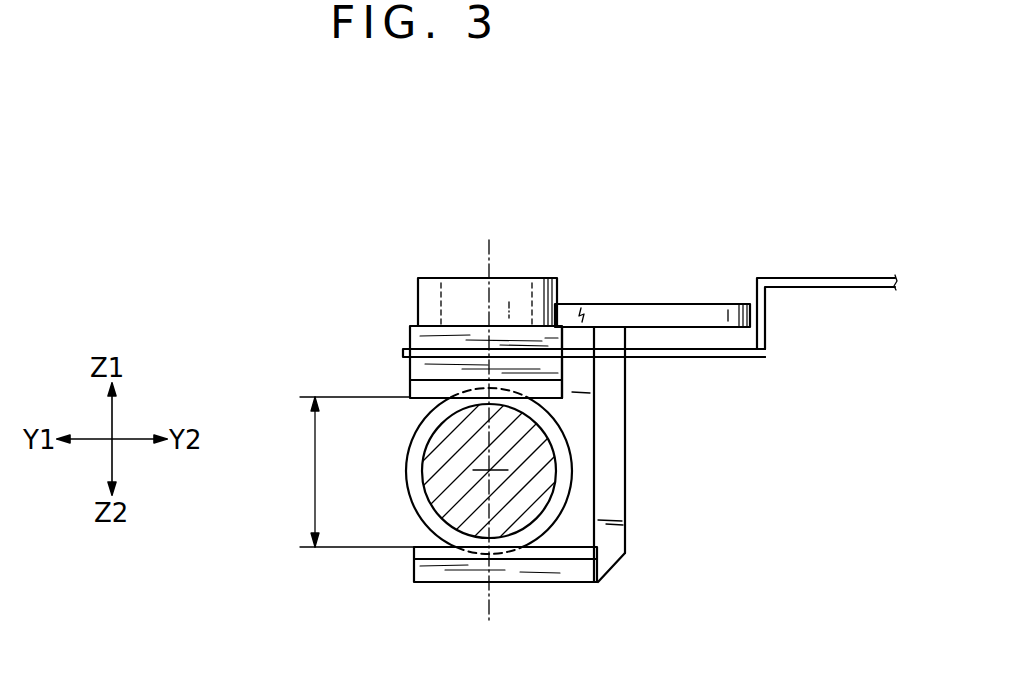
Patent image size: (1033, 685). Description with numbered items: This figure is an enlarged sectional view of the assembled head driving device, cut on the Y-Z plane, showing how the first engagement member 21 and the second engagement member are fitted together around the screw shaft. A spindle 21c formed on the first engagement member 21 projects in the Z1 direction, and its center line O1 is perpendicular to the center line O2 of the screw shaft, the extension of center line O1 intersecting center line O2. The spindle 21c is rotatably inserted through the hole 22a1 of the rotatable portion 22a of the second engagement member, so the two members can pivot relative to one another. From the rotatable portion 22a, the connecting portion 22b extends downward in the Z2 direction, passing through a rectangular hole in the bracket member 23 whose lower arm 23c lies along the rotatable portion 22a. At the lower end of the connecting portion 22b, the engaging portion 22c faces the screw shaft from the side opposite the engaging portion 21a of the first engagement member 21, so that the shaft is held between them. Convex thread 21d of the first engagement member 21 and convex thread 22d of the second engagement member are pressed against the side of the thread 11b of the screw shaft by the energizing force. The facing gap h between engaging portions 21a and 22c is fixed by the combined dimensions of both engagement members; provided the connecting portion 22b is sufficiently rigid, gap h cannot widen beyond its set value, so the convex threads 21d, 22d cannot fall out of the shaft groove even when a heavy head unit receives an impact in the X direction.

The first engagement member 21 is at (400, 330).
The engaging portion of the first engagement member 21a is at (422, 368).
The spindle 21c is at (549, 278).
The convex thread 21d is at (558, 392).
The rotatable portion 22a is at (682, 304).
The hole 22a1 is at (428, 283).
The connecting portion 22b is at (618, 498).
The engaging portion of the second engagement member 22c is at (522, 563).
The convex thread 22d is at (585, 553).
The mounting bracket 23 is at (825, 278).
The lower arm of mounting bracket 23c is at (735, 360).
The thread 11b is at (575, 454).
The center line of the spindle O1 is at (495, 260).
The center line of the screw shaft O2 is at (481, 473).
The facing gap h is at (357, 472).